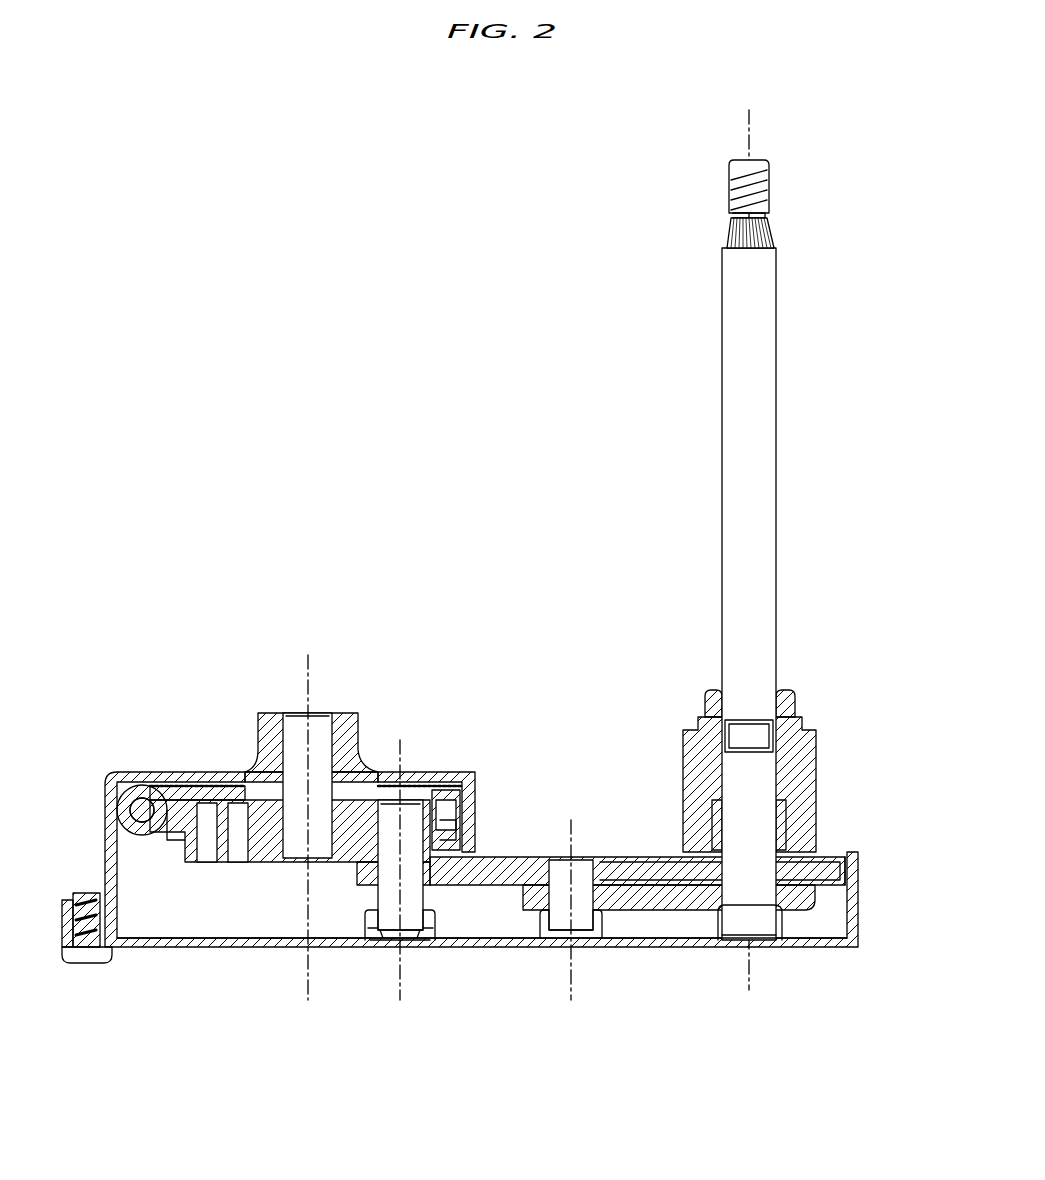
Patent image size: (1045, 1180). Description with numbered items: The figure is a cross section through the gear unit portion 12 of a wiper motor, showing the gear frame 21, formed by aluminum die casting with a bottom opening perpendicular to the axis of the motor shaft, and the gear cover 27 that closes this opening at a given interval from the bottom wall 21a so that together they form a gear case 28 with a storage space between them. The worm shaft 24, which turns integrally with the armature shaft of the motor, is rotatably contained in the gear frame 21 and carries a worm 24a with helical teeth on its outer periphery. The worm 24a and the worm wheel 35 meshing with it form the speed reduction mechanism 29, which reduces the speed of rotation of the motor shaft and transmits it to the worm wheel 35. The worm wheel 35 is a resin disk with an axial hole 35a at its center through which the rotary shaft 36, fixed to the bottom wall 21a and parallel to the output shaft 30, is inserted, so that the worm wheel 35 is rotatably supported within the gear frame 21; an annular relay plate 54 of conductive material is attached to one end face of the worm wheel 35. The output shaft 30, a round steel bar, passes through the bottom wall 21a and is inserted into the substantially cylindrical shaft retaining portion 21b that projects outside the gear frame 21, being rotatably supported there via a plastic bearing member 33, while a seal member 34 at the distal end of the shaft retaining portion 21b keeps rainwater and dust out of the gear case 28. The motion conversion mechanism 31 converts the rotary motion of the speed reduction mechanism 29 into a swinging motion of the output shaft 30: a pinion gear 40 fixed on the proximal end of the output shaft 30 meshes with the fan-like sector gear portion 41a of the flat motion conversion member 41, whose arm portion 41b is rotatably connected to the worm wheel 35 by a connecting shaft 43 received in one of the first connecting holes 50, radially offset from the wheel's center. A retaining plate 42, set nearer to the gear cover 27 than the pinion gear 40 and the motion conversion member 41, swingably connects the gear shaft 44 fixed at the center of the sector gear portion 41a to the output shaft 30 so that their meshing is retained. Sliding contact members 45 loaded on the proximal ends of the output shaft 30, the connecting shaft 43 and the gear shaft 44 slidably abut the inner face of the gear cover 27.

The gear unit portion 12 is at (419, 578).
The gear frame 21 is at (460, 770).
The bottom wall 21a is at (420, 774).
The shaft retaining portion 21b is at (815, 766).
The worm shaft 24 is at (146, 800).
The worm 24a is at (120, 790).
The gear cover 27 is at (493, 938).
The gear case 28 is at (501, 686).
The speed reduction mechanism 29 is at (148, 856).
The output shaft 30 is at (769, 372).
The motion conversion mechanism 31 is at (652, 930).
The bearing member 33 is at (790, 814).
The seal member 34 is at (796, 694).
The worm wheel 35 is at (236, 772).
The axial hole 35a is at (295, 805).
The rotary shaft 36 is at (319, 740).
The pinion gear 40 is at (830, 872).
The motion conversion member 41 is at (539, 855).
The sector gear portion 41a is at (628, 870).
The arm portion 41b is at (365, 878).
The retaining plate 42 is at (683, 898).
The connecting shaft 43 is at (396, 920).
The gear shaft 44 is at (563, 935).
The sliding contact member 45 is at (428, 935).
The first connecting hole 50 is at (392, 806).
The relay plate 54 is at (196, 788).